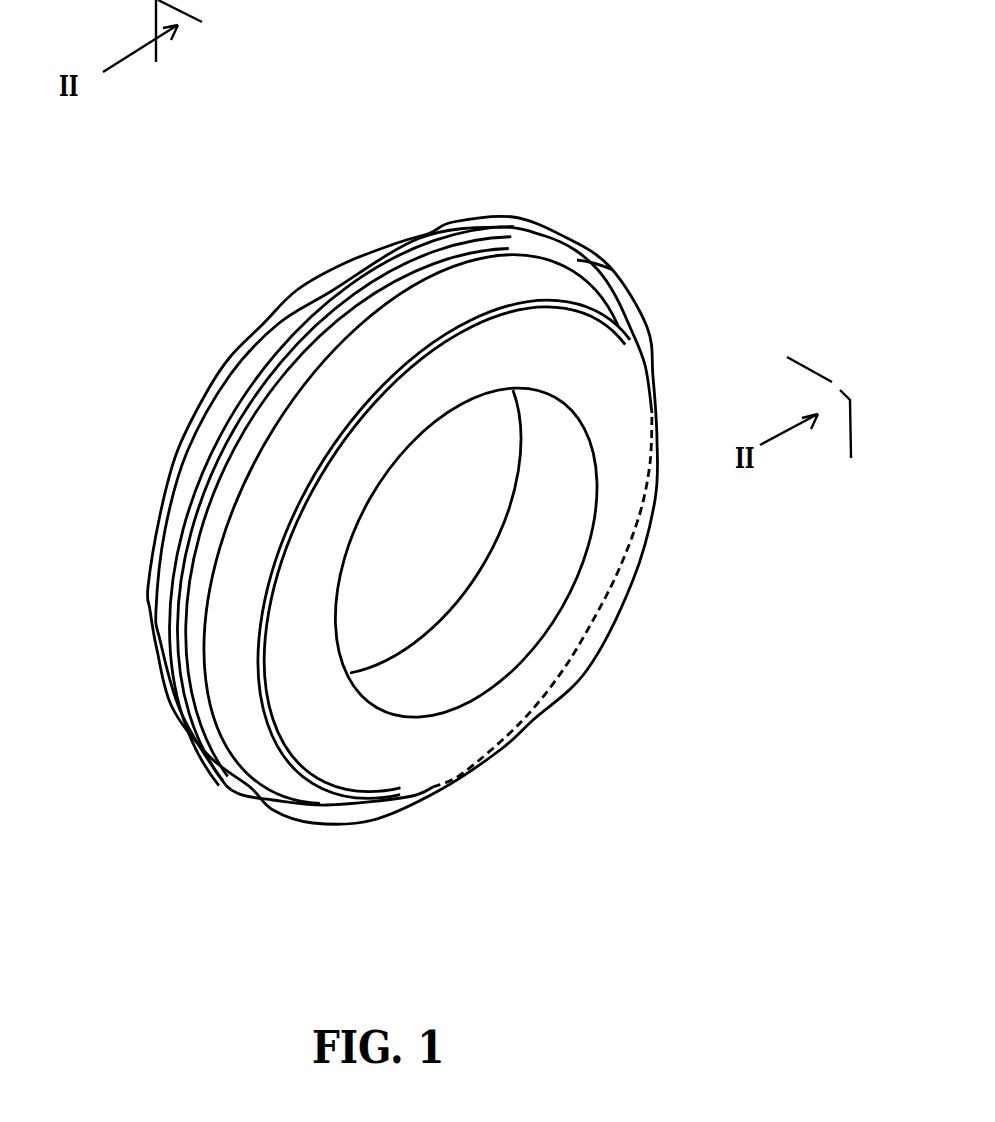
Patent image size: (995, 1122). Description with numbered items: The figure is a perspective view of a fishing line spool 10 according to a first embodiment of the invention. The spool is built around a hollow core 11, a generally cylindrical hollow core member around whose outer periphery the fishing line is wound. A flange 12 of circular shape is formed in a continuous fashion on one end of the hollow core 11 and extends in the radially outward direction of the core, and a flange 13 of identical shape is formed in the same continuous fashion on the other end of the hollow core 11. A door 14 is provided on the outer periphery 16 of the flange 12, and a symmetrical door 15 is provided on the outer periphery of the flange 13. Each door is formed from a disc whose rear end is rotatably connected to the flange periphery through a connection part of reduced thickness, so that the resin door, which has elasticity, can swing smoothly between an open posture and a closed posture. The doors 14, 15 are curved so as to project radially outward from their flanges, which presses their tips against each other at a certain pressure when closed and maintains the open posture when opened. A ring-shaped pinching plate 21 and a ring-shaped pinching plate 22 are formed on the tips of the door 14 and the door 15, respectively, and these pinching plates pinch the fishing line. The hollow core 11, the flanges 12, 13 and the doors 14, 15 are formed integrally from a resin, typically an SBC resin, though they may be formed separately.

The fishing line spool 10 is at (700, 121).
The hollow core 11 is at (432, 677).
The flange 12 is at (597, 623).
The flange 13 is at (200, 414).
The door 14 is at (260, 760).
The door 15 is at (172, 708).
The outer periphery 16 is at (380, 402).
The pinching plate 21 is at (613, 270).
The pinching plate 22 is at (482, 212).